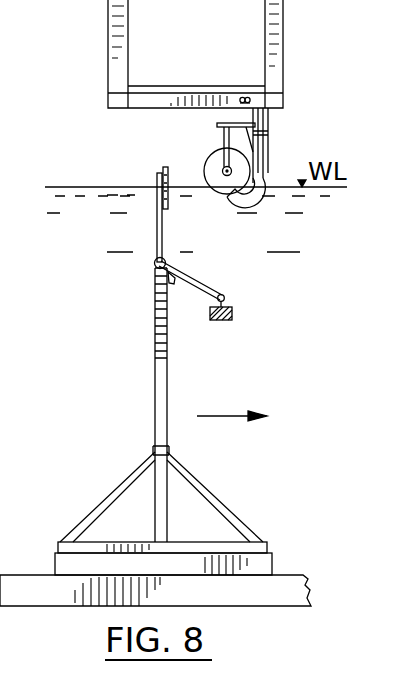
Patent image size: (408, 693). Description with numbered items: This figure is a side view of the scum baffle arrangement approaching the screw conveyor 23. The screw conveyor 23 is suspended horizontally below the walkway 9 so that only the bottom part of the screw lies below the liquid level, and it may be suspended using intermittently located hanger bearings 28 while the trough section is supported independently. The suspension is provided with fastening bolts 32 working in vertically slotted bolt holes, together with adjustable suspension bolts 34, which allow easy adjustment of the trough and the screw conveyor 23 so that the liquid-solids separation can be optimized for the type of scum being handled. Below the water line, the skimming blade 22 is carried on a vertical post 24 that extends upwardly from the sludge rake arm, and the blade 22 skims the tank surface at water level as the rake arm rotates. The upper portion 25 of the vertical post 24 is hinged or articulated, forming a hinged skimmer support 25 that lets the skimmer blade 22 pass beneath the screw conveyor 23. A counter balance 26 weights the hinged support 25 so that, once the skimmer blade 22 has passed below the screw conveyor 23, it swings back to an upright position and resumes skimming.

The walkway 9 is at (192, 86).
The adjustable suspension bolts 34 is at (245, 104).
The fastening bolts 32 is at (268, 140).
The hanger bearings 28 is at (222, 169).
The screw conveyor 23 is at (210, 188).
The skimming blade 22 is at (156, 203).
The hinged skimmer support 25 is at (163, 239).
The counter balance 26 is at (233, 312).
The vertical post 24 is at (155, 368).